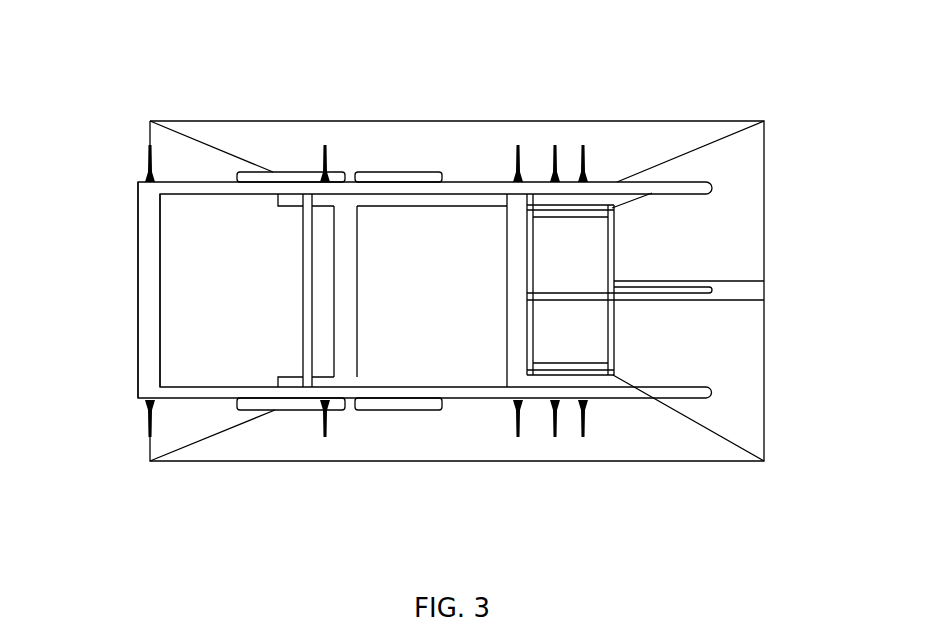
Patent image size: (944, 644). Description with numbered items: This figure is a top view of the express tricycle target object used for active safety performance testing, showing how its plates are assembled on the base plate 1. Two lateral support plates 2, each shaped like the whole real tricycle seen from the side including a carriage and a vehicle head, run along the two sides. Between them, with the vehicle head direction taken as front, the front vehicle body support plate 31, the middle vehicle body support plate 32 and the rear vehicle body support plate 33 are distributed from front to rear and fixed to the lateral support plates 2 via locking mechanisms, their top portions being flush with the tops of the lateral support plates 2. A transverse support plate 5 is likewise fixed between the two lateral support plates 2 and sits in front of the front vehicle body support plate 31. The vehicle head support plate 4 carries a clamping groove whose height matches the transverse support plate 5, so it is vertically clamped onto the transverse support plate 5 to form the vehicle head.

The base plate 1 is at (295, 130).
The lateral support plate 2 is at (478, 182).
The front vehicle body support plate 31 is at (517, 300).
The middle vehicle body support plate 32 is at (323, 308).
The rear vehicle body support plate 33 is at (138, 308).
The vehicle head support plate 4 is at (655, 287).
The transverse support plate 5 is at (578, 340).